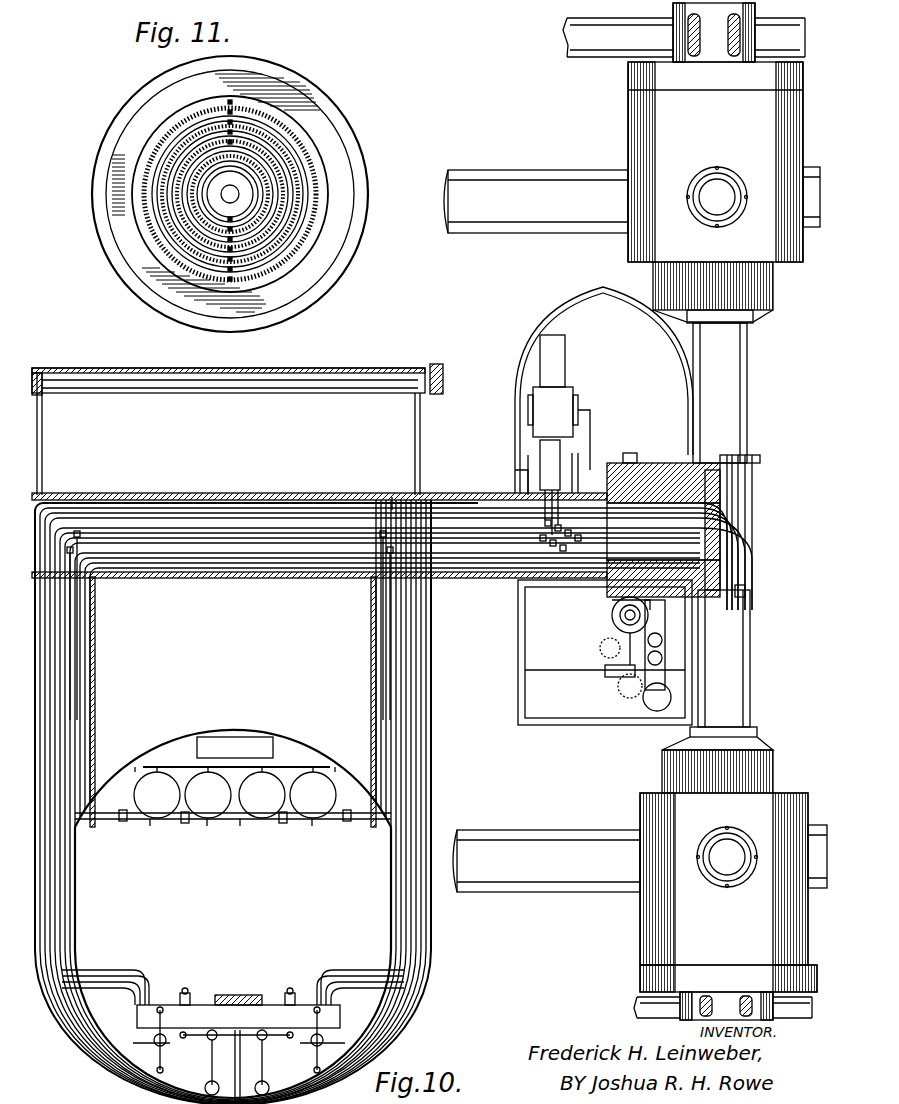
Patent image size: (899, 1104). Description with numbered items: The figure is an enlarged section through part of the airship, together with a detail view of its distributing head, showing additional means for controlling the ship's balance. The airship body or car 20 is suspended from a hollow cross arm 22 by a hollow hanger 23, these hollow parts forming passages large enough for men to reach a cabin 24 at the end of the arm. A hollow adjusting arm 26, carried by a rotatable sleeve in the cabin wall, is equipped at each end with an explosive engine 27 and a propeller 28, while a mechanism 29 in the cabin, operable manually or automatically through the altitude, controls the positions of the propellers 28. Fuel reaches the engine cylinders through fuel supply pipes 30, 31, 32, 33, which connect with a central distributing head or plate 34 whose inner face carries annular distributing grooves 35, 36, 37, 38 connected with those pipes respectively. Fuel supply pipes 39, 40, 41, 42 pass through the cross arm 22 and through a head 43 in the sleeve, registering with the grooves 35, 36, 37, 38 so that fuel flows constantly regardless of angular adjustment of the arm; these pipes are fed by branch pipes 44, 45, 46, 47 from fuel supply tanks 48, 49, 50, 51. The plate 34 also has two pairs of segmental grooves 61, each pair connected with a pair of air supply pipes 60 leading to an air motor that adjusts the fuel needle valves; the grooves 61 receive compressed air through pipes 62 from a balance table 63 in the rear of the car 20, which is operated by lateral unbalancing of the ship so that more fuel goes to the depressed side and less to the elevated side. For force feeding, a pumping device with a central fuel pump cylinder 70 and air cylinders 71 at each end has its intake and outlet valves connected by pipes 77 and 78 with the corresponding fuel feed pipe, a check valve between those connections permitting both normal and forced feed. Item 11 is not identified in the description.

In FIG. 10, the tube connection 11 is at (395, 497).
In FIG. 10, the airship body or car 20 is at (235, 747).
In FIG. 10, the hollow cross arm 22 is at (378, 368).
In FIG. 10, the hollow hanger 23 is at (95, 613).
In FIG. 10, the cabin 24 is at (518, 360).
In FIG. 10, the hollow adjusting arm 26 is at (740, 380).
In FIG. 10, the explosive engine 27 is at (720, 840).
In FIG. 10, the propeller 28 is at (672, 40).
In FIG. 10, the mechanism 29 is at (605, 652).
In FIG. 10, the fuel supply pipe 30 is at (727, 471).
In FIG. 10, the fuel supply pipe 31 is at (732, 482).
In FIG. 10, the fuel supply pipe 32 is at (738, 492).
In FIG. 10, the fuel supply pipe 33 is at (745, 504).
In FIG. 11, the central distributing head or plate 34 is at (362, 210).
In FIG. 10, the central distributing head or plate 34 is at (752, 600).
In FIG. 11, the annular distributing groove 35 is at (258, 190).
In FIG. 11, the annular distributing groove 36 is at (260, 165).
In FIG. 11, the annular distributing groove 37 is at (262, 158).
In FIG. 11, the annular distributing groove 38 is at (263, 147).
In FIG. 10, the fuel supply pipe 39 is at (287, 538).
In FIG. 10, the fuel supply pipe 40 is at (312, 530).
In FIG. 10, the fuel supply pipe 41 is at (338, 545).
In FIG. 10, the fuel supply pipe 42 is at (365, 523).
In FIG. 10, the head 43 is at (582, 470).
In FIG. 10, the branch pipe 44 is at (388, 623).
In FIG. 10, the branch pipe 45 is at (73, 650).
In FIG. 10, the branch pipe 46 is at (380, 615).
In FIG. 10, the branch pipe 47 is at (80, 636).
In FIG. 10, the fuel supply tank 48 is at (313, 795).
In FIG. 10, the fuel supply tank 49 is at (157, 795).
In FIG. 10, the fuel supply tank 50 is at (262, 795).
In FIG. 10, the fuel supply tank 51 is at (208, 795).
In FIG. 10, the air supply pipe 60 is at (742, 458).
In FIG. 11, the segmental groove 61 is at (266, 100).
In FIG. 10, the segmental groove 61 is at (745, 590).
In FIG. 10, the air supply pipe 62 is at (452, 518).
In FIG. 10, the balance table 63 is at (239, 1046).
In FIG. 10, the fuel pump cylinder 70 is at (553, 412).
In FIG. 10, the air cylinder 71 is at (552, 412).
In FIG. 10, the pipe 77 is at (520, 468).
In FIG. 10, the pipe 78 is at (591, 442).